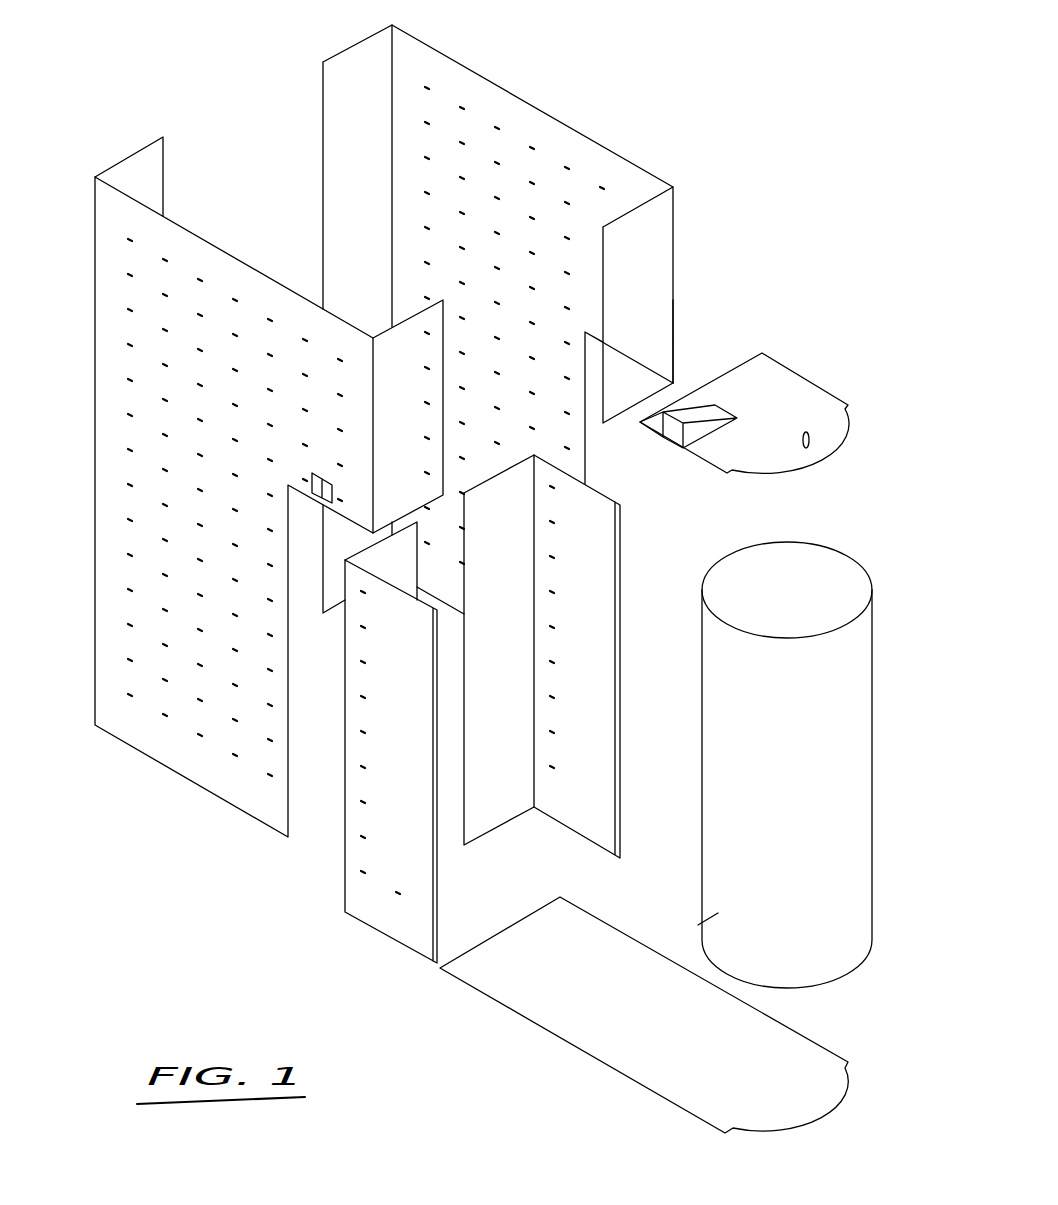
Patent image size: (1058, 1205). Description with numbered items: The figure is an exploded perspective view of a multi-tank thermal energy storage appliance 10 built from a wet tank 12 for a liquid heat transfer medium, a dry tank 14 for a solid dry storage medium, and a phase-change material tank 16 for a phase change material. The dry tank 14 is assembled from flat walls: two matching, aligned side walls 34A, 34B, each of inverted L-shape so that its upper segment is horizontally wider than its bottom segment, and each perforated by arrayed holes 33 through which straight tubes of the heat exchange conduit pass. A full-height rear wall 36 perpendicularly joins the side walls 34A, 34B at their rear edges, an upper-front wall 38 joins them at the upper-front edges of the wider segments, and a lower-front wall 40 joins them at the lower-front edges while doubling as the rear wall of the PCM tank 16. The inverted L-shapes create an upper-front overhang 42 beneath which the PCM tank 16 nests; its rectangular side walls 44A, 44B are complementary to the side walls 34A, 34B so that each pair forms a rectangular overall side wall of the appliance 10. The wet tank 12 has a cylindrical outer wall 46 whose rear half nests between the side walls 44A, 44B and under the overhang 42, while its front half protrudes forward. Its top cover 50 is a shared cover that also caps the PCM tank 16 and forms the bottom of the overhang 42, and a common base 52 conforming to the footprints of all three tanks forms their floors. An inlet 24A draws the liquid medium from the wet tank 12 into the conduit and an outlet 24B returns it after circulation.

The appliance 10 is at (808, 224).
The wet tank 12 is at (850, 714).
The dry tank 14 is at (172, 746).
The phase-change material tank 16 is at (377, 907).
The inlet 24A is at (810, 439).
The outlet 24B is at (700, 923).
The arrayed holes 33 is at (165, 437).
The side wall 34A is at (117, 537).
The side wall 34B is at (423, 177).
The rear wall 36 is at (150, 186).
The upper-front wall 38 is at (418, 412).
The lower-front wall 40 is at (506, 546).
The upper-front overhang 42 is at (657, 325).
The side wall 44A is at (418, 764).
The side wall 44B is at (604, 650).
The cylindrical outer wall 46 is at (862, 796).
The top cover 50 is at (786, 418).
The common base 52 is at (680, 1043).